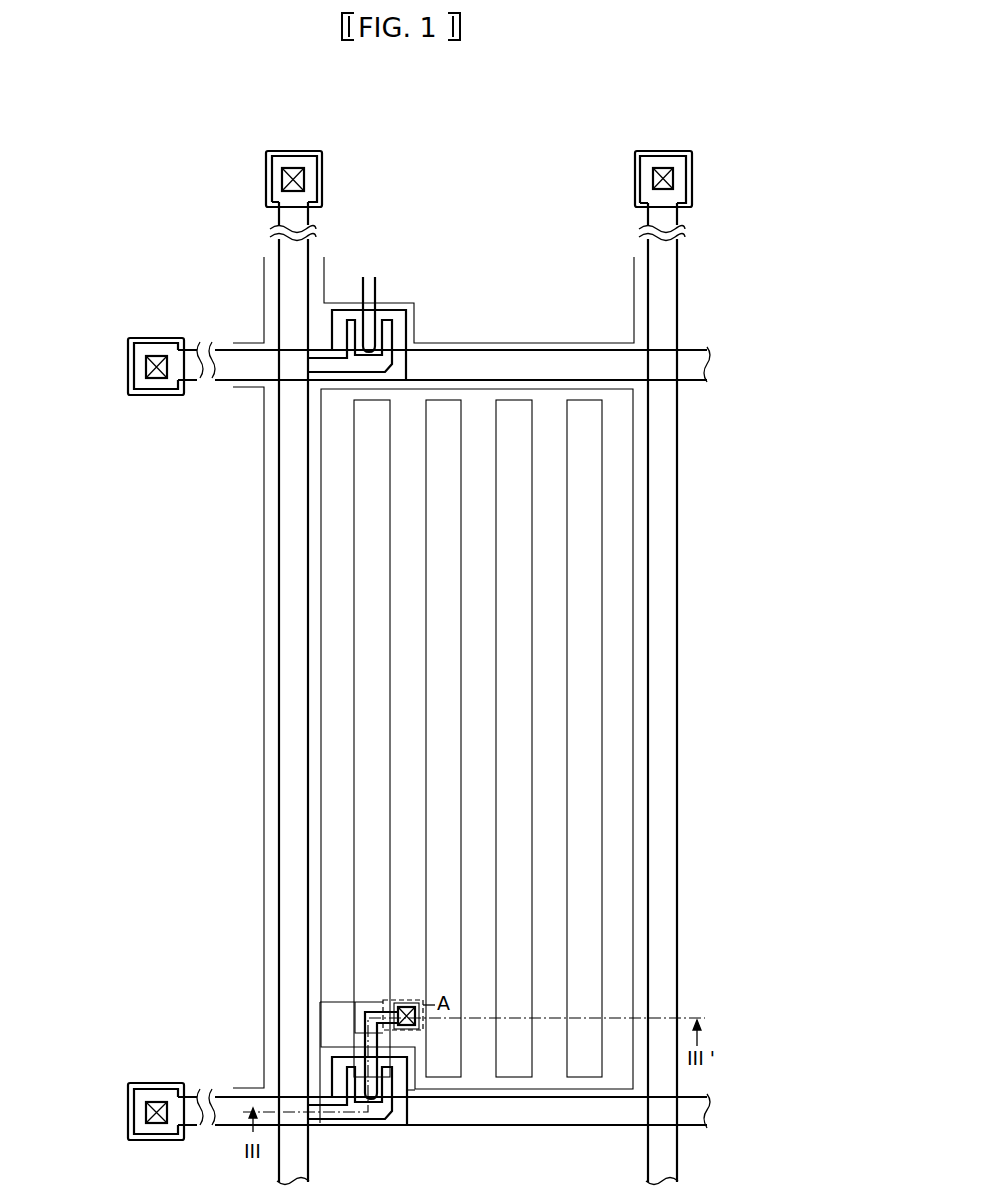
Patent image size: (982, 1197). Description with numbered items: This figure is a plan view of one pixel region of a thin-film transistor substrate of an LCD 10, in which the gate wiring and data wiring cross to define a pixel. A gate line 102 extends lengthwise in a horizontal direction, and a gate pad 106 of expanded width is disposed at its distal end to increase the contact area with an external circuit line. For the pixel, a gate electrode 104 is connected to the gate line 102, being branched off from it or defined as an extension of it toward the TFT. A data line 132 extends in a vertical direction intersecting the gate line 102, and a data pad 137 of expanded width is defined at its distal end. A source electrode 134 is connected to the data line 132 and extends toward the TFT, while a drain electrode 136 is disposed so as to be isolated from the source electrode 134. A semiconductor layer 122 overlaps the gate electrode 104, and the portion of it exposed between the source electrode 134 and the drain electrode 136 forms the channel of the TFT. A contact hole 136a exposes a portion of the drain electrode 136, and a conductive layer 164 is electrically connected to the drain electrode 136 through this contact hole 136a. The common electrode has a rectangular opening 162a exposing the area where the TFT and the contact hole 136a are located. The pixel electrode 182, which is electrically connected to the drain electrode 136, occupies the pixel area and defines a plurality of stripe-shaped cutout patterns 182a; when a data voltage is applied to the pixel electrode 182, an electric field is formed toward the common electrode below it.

The LCD 10 is at (464, 152).
The gate line 102 is at (587, 1117).
The gate electrode 104 is at (332, 1077).
The gate pad 106 is at (128, 1100).
The semiconductor layer 122 is at (417, 1122).
The data line 132 is at (279, 520).
The source electrode 134 is at (347, 1093).
The drain electrode 136 is at (378, 1042).
The contact hole 136a is at (412, 1000).
The data pad 137 is at (266, 171).
The opening 162a is at (375, 1122).
The conductive layer 164 is at (403, 1006).
The pixel electrode 182 is at (633, 535).
The cutout patterns 182a is at (585, 495).